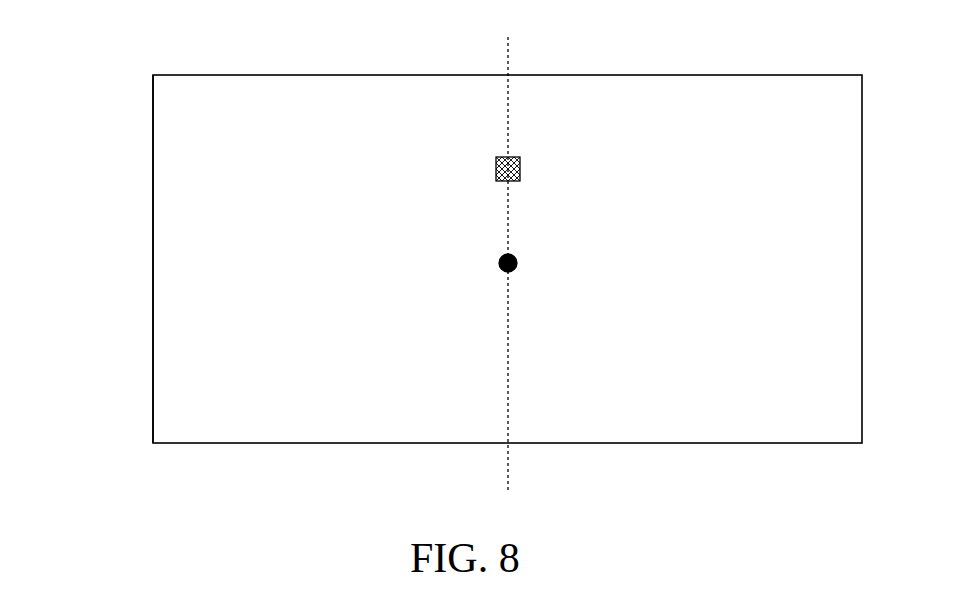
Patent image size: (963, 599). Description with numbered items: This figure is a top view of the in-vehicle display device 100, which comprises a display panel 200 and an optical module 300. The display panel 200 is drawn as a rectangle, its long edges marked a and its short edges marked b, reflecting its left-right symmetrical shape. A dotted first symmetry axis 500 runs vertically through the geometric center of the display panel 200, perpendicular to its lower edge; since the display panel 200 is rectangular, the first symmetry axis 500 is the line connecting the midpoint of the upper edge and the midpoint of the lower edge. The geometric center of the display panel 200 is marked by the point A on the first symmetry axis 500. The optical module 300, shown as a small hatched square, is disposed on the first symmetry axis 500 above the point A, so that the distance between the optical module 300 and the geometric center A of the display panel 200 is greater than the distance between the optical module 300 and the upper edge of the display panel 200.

The in-vehicle display device 100 is at (127, 65).
The display panel 200 is at (153, 363).
The optical module 300 is at (496, 156).
The first symmetry axis 500 is at (508, 403).
The center point A is at (513, 273).
The long side length a is at (481, 263).
The short side length b is at (509, 244).